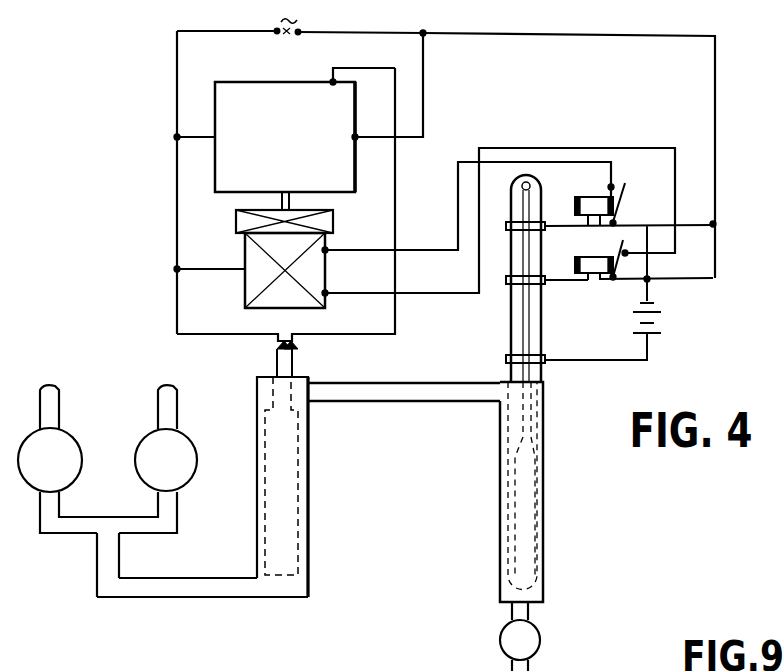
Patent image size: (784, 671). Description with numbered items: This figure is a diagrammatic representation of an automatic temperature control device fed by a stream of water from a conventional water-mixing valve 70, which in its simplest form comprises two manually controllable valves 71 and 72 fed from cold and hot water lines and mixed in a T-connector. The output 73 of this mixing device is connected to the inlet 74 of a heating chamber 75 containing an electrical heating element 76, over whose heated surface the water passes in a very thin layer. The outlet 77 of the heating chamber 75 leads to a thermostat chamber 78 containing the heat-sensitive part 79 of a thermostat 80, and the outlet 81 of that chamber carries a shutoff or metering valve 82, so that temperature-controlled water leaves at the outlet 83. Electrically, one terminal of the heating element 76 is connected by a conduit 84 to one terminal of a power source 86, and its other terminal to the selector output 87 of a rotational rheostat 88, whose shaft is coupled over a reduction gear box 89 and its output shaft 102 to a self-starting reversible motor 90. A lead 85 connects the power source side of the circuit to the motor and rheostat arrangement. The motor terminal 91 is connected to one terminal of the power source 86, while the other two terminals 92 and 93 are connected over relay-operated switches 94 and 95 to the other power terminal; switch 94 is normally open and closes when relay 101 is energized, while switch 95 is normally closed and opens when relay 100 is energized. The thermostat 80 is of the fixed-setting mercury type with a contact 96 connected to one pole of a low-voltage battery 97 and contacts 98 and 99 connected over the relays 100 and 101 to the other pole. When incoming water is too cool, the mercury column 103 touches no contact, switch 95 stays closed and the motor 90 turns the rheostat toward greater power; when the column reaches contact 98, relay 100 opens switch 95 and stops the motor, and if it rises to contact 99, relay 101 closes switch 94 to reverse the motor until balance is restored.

The water-mixing valve 70 is at (77, 541).
The manually controllable valve 71 is at (68, 433).
The manually controllable valve 72 is at (190, 442).
The output 73 is at (120, 562).
The inlet 74 is at (290, 598).
The heating chamber 75 is at (310, 497).
The electrical heating element 76 is at (290, 458).
The outlet 77 is at (310, 382).
The thermostat chamber 78 is at (545, 508).
The heat-sensitive part 79 is at (520, 523).
The thermostat 80 is at (508, 327).
The outlet 81 is at (511, 610).
The shutoff or metering valve 82 is at (541, 635).
The outlet 83 is at (512, 668).
The conduit 84 is at (177, 205).
The lead 85 is at (400, 186).
The power source 86 is at (300, 40).
The selector output 87 is at (331, 80).
The rotational rheostat 88 is at (230, 103).
The gear box 89 is at (334, 224).
The motor 90 is at (245, 290).
The terminal 91 is at (243, 268).
The terminal 92 is at (327, 251).
The terminal 93 is at (327, 295).
The relay-operated switch 94 is at (622, 206).
The relay-operated switch 95 is at (620, 268).
The contact 96 is at (546, 364).
The low-voltage battery 97 is at (662, 326).
The contact 98 is at (506, 280).
The contact 99 is at (506, 226).
The relay 100 is at (590, 257).
The relay 101 is at (580, 198).
The output shaft 102 is at (293, 207).
The mercury column 103 is at (528, 345).